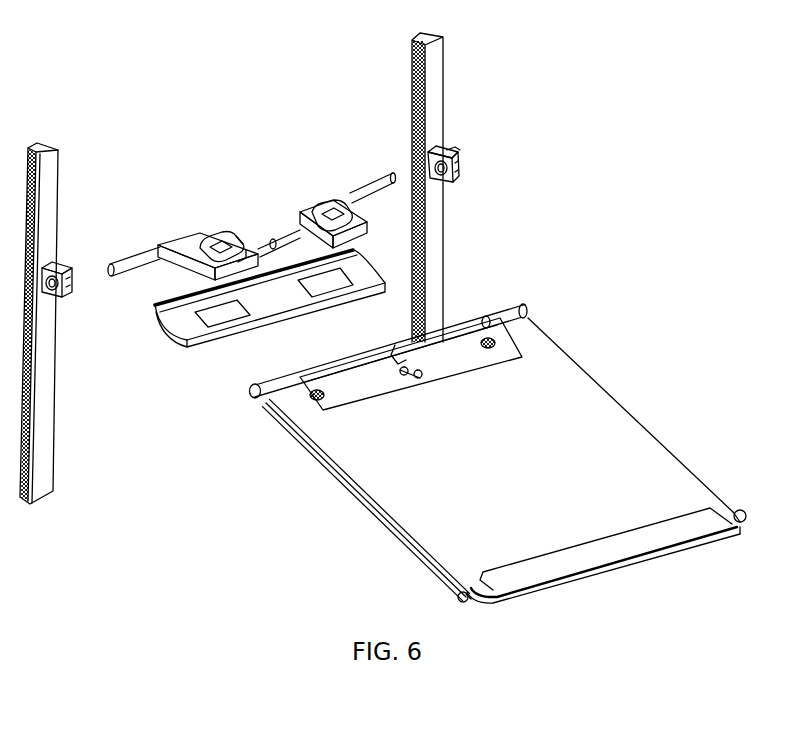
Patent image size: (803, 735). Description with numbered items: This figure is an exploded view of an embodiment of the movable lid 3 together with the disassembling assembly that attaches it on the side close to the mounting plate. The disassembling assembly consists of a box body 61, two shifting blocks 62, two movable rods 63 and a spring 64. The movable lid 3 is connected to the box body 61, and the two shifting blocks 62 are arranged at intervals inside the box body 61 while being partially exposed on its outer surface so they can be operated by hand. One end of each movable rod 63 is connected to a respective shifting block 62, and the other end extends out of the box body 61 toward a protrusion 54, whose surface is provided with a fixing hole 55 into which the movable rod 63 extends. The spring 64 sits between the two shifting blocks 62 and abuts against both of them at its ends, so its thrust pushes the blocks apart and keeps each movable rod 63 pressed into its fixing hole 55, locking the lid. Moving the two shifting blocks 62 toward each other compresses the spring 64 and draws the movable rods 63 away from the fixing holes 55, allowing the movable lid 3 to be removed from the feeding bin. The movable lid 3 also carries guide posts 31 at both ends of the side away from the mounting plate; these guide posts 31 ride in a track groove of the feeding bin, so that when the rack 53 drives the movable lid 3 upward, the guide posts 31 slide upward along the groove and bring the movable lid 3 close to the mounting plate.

The movable lid 3 is at (570, 418).
The guide post 31 is at (460, 592).
The rack 53 is at (432, 262).
The protrusion 54 is at (458, 175).
The fixing hole 55 is at (460, 160).
The box body 61 is at (187, 325).
The shifting block 62 is at (218, 237).
The movable rod 63 is at (151, 247).
The spring 64 is at (272, 240).